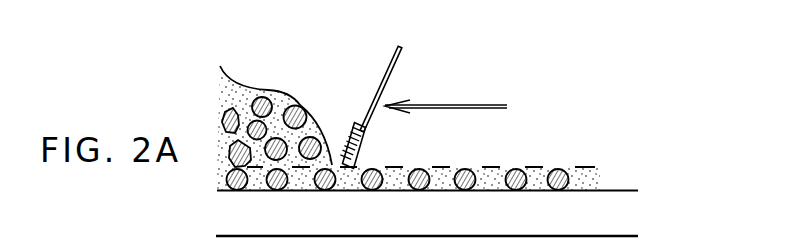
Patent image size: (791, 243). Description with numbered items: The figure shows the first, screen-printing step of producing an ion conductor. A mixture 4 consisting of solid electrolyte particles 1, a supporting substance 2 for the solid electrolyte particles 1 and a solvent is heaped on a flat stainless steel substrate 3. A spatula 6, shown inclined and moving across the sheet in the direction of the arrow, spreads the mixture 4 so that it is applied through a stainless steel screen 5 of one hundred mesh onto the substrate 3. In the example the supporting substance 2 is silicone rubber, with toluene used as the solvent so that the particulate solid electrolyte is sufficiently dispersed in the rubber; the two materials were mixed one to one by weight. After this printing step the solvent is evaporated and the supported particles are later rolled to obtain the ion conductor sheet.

The solid electrolyte particles 1 is at (522, 177).
The supporting substance 2 is at (485, 180).
The substrate 3 is at (627, 210).
The mixture 4 is at (283, 92).
The screen 5 is at (588, 164).
The spatula 6 is at (401, 56).